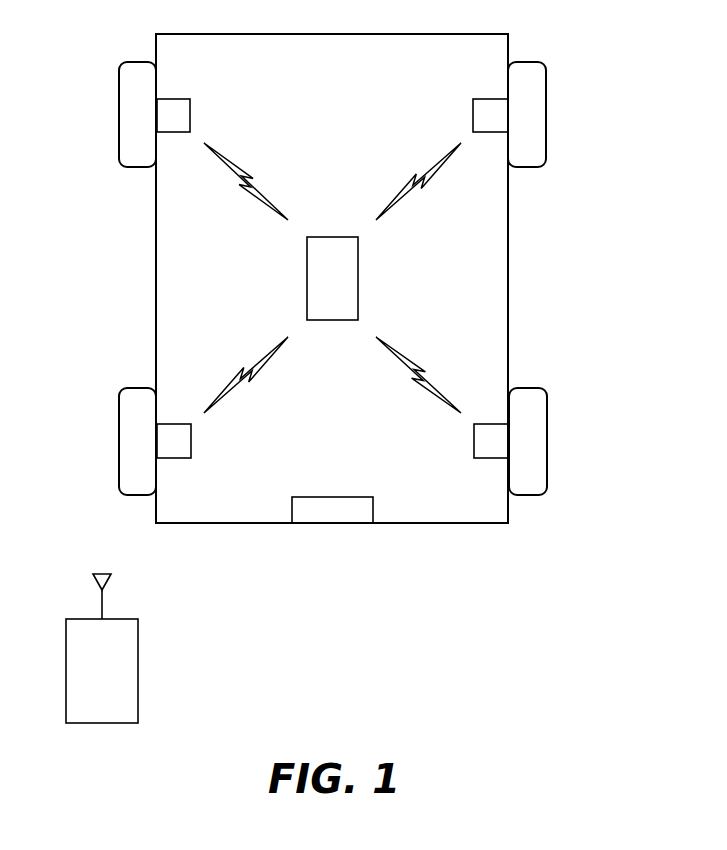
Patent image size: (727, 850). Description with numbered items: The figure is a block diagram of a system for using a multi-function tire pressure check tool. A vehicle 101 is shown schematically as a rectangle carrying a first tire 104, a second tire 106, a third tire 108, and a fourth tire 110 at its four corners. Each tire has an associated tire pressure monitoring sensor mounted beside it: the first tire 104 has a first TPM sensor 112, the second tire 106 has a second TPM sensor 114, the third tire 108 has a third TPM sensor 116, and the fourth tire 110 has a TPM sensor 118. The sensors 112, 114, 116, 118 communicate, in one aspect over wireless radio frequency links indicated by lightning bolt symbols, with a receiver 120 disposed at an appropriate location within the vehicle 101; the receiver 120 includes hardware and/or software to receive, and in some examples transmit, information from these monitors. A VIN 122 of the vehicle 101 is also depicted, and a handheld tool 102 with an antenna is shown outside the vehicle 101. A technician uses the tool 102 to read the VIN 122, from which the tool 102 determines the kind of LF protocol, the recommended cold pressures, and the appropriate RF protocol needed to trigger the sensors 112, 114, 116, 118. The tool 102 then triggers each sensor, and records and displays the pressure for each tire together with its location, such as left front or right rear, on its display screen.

The vehicle 101 is at (510, 272).
The tool 102 is at (80, 619).
The first tire 104 is at (119, 117).
The second tire 106 is at (546, 117).
The third tire 108 is at (119, 440).
The fourth tire 110 is at (547, 440).
The first TPM sensor 112 is at (191, 117).
The second TPM sensor 114 is at (473, 117).
The third TPM sensor 116 is at (191, 440).
The TPM sensor 118 is at (474, 440).
The receiver 120 is at (332, 237).
The VIN 122 is at (302, 497).